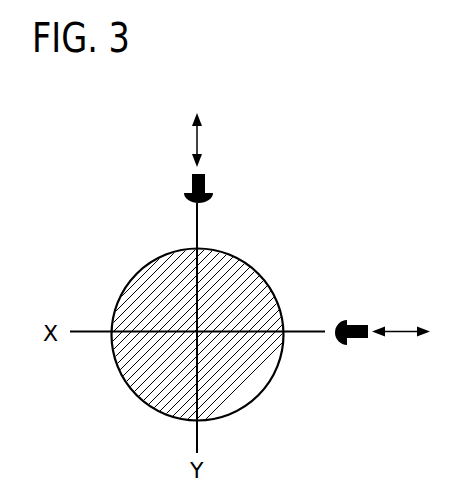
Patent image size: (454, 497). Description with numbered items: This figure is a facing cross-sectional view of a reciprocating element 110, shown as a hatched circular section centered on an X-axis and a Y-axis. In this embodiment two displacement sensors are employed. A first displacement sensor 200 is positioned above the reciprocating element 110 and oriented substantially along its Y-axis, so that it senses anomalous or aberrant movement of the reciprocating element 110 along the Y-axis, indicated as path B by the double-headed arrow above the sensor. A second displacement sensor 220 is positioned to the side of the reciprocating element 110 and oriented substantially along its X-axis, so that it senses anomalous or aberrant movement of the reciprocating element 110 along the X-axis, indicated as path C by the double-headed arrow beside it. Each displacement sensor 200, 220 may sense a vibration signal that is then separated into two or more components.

The reciprocating element 110 is at (137, 273).
The first displacement sensor 200 is at (207, 192).
The second displacement sensor 220 is at (345, 343).